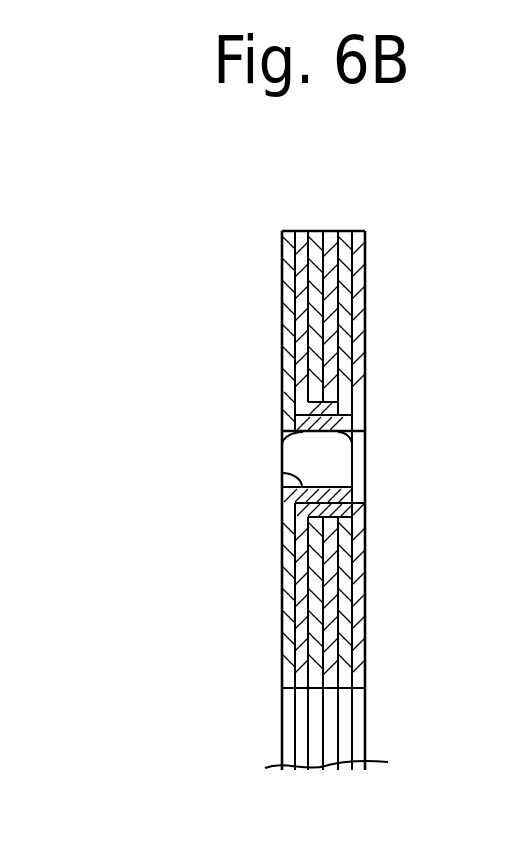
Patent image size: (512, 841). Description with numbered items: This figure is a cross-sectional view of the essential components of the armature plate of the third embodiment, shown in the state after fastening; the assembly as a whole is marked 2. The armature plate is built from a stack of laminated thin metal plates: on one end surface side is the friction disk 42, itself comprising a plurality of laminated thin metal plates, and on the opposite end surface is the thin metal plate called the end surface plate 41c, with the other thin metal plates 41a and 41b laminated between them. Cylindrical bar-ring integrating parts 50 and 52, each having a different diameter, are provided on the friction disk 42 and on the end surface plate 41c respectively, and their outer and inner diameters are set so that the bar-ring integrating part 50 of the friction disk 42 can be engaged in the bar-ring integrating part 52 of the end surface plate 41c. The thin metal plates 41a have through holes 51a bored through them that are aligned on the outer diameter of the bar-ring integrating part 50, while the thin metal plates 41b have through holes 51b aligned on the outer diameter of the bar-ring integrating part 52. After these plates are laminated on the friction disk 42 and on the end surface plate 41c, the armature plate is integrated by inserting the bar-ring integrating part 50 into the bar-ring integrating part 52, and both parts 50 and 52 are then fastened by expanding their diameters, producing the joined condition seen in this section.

The laminated piezoelectric element 2 is at (194, 500).
The thin metal plate 41a is at (281, 268).
The thin metal plate 41b is at (342, 298).
The end surface plate 41c is at (365, 333).
The friction disk 42 is at (282, 622).
The bar-ring integrating part 50 is at (282, 445).
The through hole 51a is at (282, 473).
The through hole 51b is at (352, 505).
The bar-ring integrating part 52 is at (352, 445).